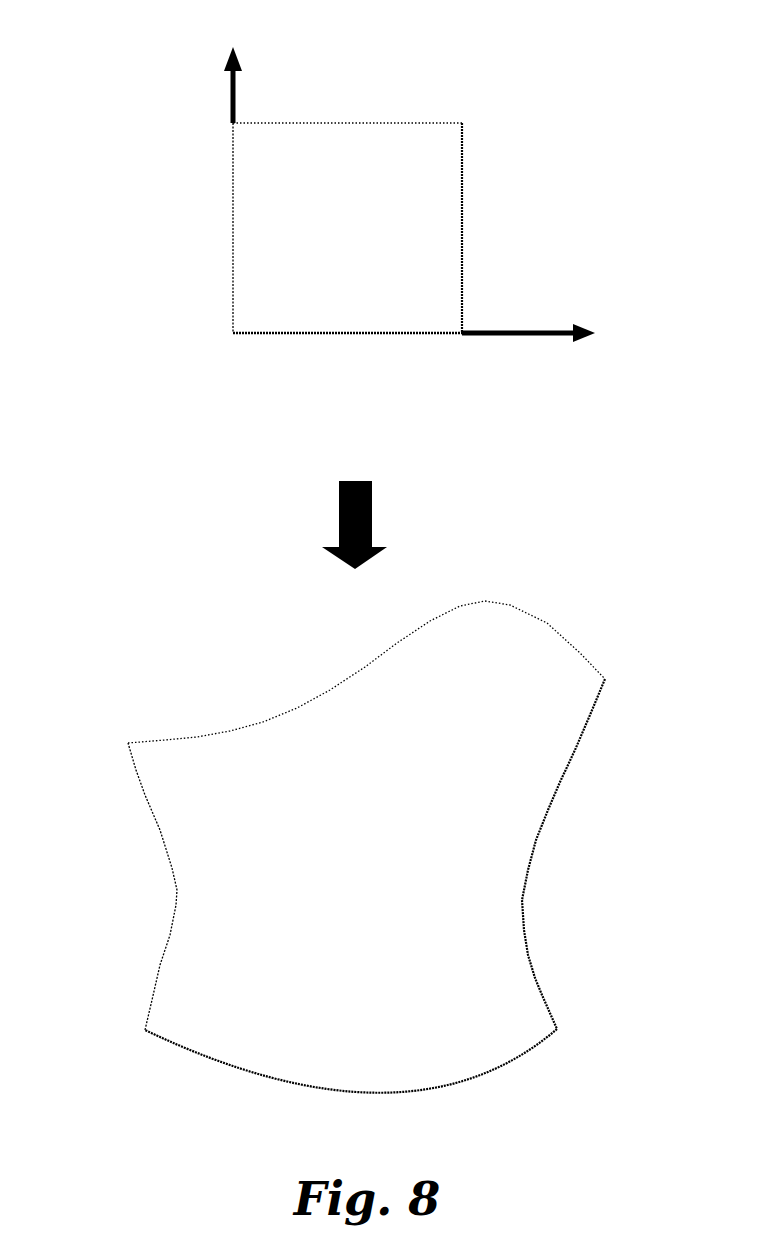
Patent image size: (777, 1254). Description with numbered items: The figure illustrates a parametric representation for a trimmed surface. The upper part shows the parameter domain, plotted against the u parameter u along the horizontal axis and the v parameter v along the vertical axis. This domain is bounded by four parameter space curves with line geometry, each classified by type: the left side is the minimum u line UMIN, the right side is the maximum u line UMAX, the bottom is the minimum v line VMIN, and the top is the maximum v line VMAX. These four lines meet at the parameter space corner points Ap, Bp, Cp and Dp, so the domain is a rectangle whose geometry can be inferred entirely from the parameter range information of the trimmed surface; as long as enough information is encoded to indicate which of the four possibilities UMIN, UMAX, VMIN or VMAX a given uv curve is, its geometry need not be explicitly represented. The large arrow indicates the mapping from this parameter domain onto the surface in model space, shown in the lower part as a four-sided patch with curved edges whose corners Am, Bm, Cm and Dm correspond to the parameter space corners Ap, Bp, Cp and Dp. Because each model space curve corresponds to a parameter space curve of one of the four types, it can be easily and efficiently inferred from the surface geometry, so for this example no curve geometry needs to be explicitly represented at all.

The parameter-space corner point A Ap is at (215, 368).
The parameter-space corner point B Bp is at (484, 384).
The parameter-space corner point C Cp is at (504, 101).
The parameter-space corner point D Dp is at (195, 99).
The model-space corner point A Am is at (116, 1074).
The model-space corner point B Bm is at (593, 1059).
The model-space corner point C Cm is at (656, 677).
The model-space corner point D Dm is at (71, 727).
The minimum u line parameter space curve UMIN is at (159, 228).
The maximum u line parameter space curve UMAX is at (528, 228).
The minimum v line parameter space curve VMIN is at (347, 364).
The maximum v line parameter space curve VMAX is at (347, 86).
The u parameter u is at (550, 351).
The v parameter v is at (230, 61).